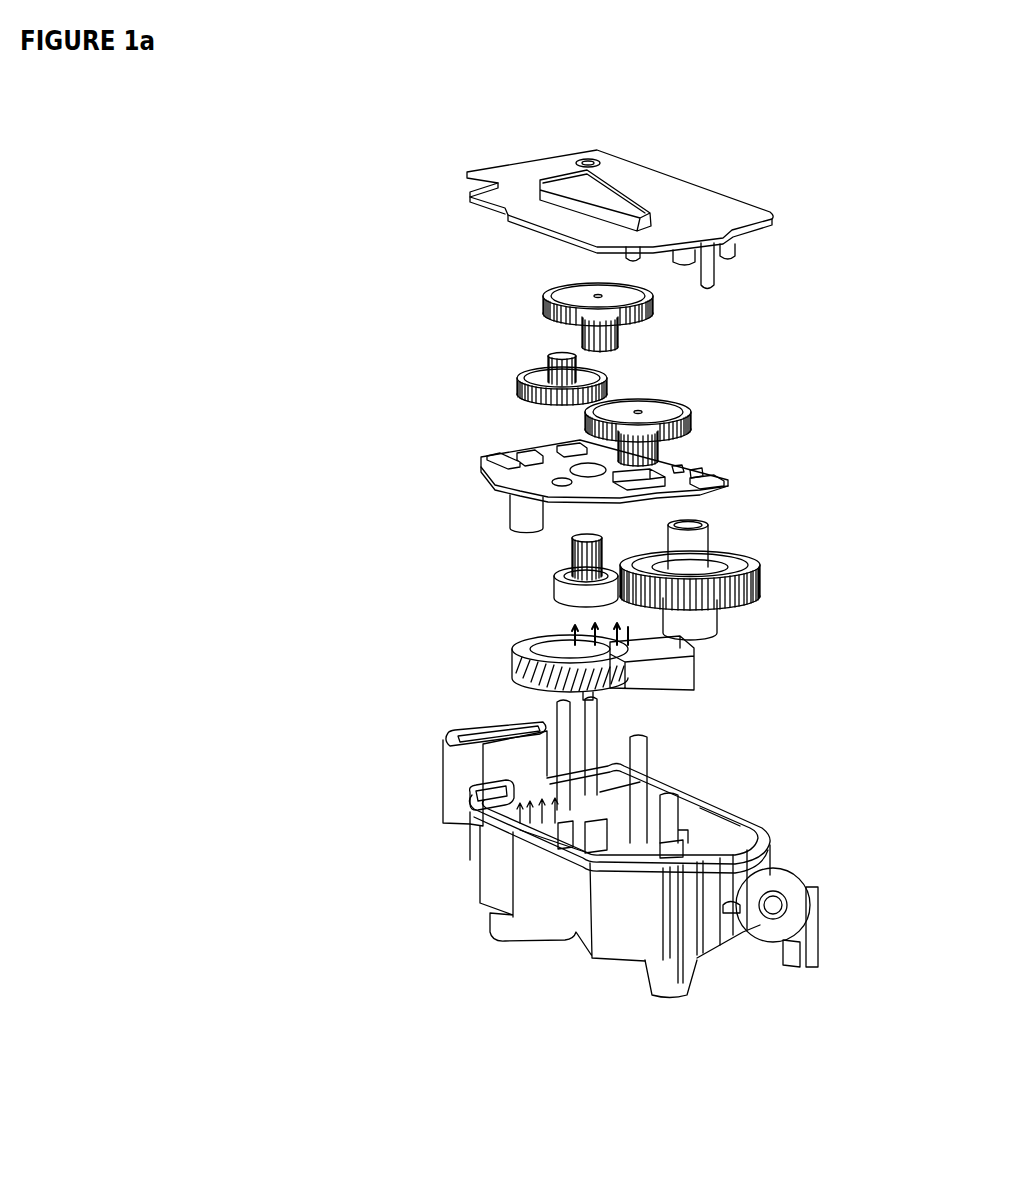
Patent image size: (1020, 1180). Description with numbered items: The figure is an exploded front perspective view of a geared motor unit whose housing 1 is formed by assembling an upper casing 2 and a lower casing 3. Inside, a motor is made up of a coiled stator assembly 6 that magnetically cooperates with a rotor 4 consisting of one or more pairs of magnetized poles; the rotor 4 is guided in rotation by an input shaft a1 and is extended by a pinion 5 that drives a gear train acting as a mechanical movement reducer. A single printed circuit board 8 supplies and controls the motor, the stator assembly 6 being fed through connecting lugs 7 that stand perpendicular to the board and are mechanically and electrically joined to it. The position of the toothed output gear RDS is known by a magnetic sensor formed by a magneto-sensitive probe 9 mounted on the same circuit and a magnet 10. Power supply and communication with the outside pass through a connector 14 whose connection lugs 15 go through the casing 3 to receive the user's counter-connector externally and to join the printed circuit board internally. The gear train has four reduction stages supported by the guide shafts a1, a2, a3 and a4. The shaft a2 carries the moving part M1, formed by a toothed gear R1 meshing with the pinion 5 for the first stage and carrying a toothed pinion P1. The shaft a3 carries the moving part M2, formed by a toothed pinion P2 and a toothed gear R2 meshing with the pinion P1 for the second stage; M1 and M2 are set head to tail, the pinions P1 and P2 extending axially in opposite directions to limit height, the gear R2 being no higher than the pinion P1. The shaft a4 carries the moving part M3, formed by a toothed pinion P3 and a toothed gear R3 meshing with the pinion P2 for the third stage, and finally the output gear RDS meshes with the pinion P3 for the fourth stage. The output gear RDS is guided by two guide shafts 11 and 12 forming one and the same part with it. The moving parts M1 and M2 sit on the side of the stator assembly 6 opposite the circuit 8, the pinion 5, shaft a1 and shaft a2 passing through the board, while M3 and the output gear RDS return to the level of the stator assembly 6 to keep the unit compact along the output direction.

The housing 1 is at (337, 812).
The upper casing 2 is at (470, 200).
The lower casing 3 is at (490, 882).
The rotor 4 is at (560, 588).
The pinion 5 is at (575, 555).
The coiled stator assembly 6 is at (696, 672).
The connecting lugs 7 is at (560, 630).
The printed circuit board 8 is at (484, 458).
The magneto-sensitive probe 9 is at (730, 496).
The magnet 10 is at (740, 560).
The guide shaft 11 is at (708, 542).
The guide shaft 12 is at (708, 618).
The connector 14 is at (453, 755).
The connection lugs 15 is at (490, 778).
The input shaft a1 is at (565, 698).
The guide shaft a2 is at (587, 722).
The guide shaft a3 is at (640, 758).
The guide shaft a4 is at (660, 800).
The moving part M1 is at (416, 362).
The moving part M2 is at (784, 336).
The moving part M3 is at (820, 452).
The toothed pinion P1 is at (548, 360).
The toothed pinion P2 is at (618, 333).
The toothed pinion P3 is at (658, 446).
The toothed gear R1 is at (517, 385).
The toothed gear R2 is at (653, 300).
The toothed gear R3 is at (691, 414).
The toothed output gear RDS is at (758, 590).